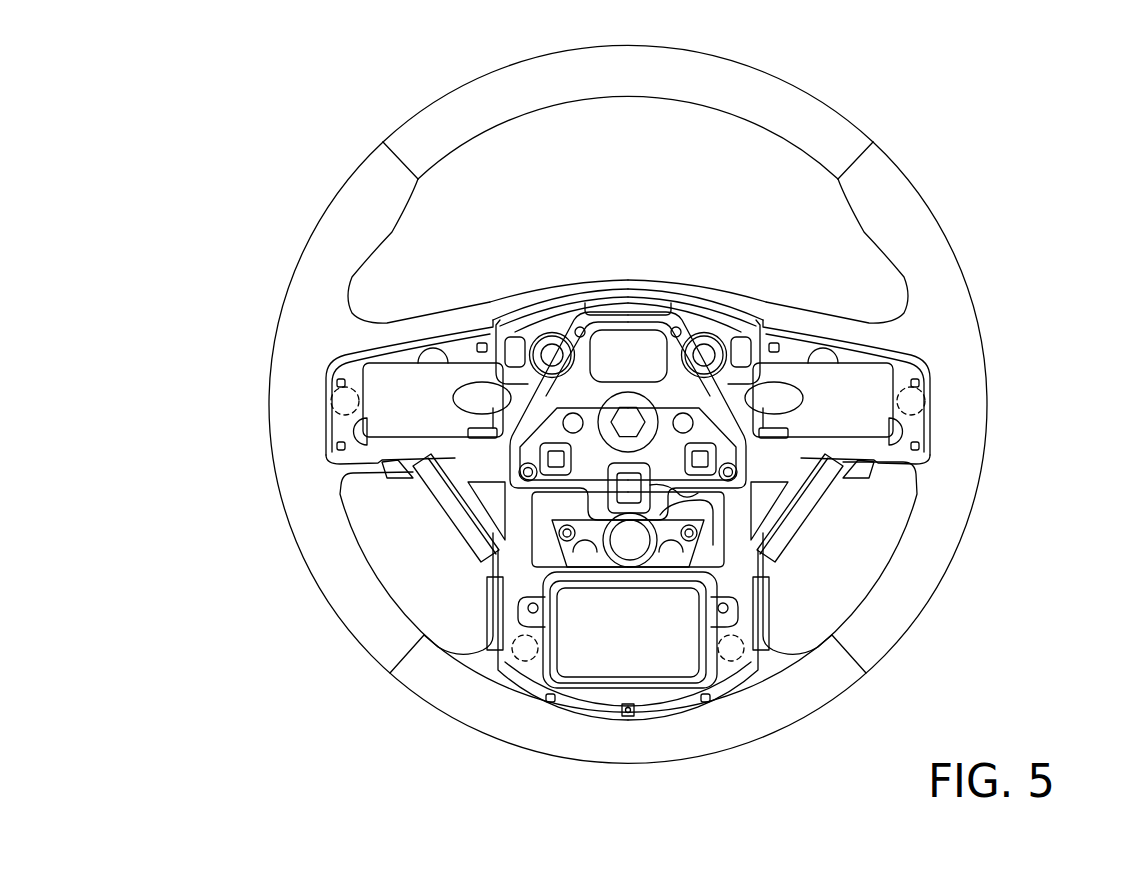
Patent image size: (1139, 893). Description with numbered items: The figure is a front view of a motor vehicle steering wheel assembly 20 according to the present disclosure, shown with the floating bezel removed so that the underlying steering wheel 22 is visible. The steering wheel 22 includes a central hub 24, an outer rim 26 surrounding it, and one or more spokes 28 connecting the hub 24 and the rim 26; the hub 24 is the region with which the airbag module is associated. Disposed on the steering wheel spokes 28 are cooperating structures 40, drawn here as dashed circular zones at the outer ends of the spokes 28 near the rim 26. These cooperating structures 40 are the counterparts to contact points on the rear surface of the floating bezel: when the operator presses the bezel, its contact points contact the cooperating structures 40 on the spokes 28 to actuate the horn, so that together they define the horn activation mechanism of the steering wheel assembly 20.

The steering wheel assembly 20 is at (644, 406).
The steering wheel 22 is at (997, 405).
The hub 24 is at (707, 283).
The rim 26 is at (785, 95).
The spokes 28 is at (430, 308).
The cooperating structures 40 is at (340, 392).